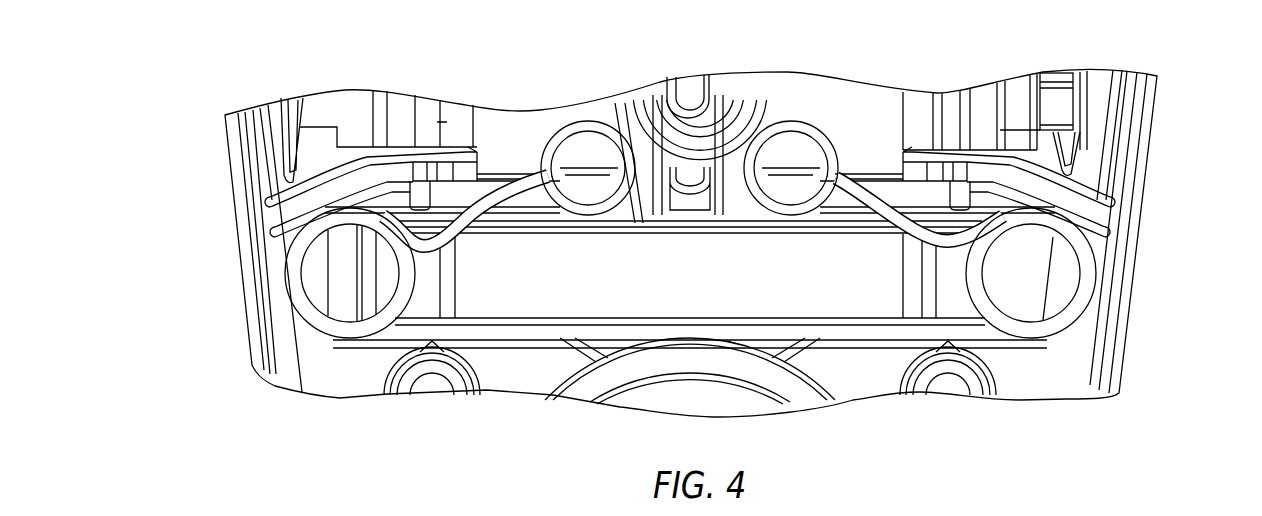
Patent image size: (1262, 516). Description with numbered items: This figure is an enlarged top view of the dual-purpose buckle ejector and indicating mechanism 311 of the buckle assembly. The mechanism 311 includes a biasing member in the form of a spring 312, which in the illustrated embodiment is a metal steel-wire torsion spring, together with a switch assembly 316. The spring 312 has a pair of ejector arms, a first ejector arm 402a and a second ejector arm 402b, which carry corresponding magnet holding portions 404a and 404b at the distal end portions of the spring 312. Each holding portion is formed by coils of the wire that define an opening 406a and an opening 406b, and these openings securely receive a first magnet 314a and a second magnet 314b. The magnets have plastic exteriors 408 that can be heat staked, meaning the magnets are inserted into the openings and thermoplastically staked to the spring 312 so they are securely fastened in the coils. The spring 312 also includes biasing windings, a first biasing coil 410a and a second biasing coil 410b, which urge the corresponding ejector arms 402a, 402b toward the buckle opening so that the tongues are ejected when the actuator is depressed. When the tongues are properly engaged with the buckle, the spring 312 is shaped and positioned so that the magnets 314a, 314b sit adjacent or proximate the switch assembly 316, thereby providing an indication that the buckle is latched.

The buckle ejector and indicating mechanism 311 is at (833, 182).
The spring 312 is at (957, 236).
The first magnet 314a is at (577, 152).
The second magnet 314b is at (805, 192).
The switch assembly 316 is at (600, 298).
The first ejector arm 402a is at (468, 224).
The second ejector arm 402b is at (927, 243).
The magnet holding portion 404a is at (590, 130).
The magnet holding portion 404b is at (783, 133).
The opening 406a is at (601, 159).
The opening 406b is at (793, 155).
The plastic exterior 408 is at (593, 175).
The first biasing coil 410a is at (284, 273).
The second biasing coil 410b is at (1093, 275).